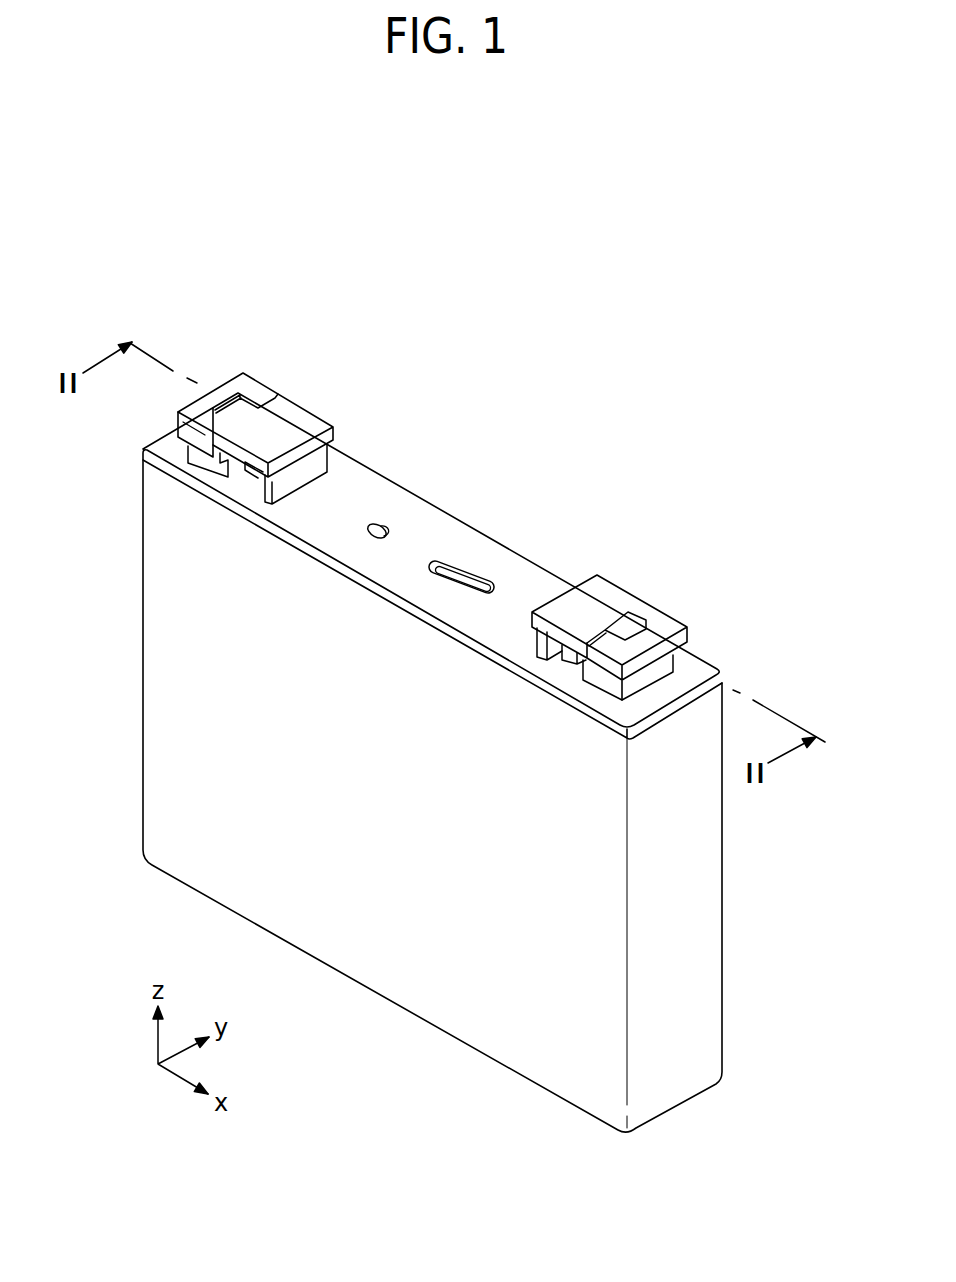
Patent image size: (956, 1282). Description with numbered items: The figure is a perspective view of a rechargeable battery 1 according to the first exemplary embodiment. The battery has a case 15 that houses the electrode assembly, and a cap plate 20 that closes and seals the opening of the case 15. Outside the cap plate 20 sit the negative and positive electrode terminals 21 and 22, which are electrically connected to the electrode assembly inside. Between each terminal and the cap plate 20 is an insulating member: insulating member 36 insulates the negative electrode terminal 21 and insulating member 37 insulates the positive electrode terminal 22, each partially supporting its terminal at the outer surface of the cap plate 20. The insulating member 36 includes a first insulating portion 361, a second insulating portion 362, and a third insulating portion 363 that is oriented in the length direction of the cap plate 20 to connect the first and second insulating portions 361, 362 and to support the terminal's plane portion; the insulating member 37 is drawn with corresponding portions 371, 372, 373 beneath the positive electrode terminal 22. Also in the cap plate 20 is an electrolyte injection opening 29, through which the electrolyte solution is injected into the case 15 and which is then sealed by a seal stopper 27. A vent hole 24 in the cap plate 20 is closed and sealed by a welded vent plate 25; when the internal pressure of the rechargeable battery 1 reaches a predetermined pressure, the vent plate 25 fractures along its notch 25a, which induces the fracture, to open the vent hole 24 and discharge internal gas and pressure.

The rechargeable battery 1 is at (463, 717).
The case 15 is at (703, 906).
The cap plate 20 is at (553, 570).
The negative electrode terminal 21 is at (304, 407).
The positive electrode terminal 22 is at (626, 597).
The vent hole 24 is at (510, 529).
The vent plate 25 is at (457, 572).
The notch 25a is at (478, 583).
The seal stopper 27 is at (373, 525).
The electrolyte injection opening 29 is at (387, 537).
The insulating member 36 is at (197, 524).
The first insulating portion 361 is at (197, 435).
The second insulating portion 362 is at (298, 477).
The third insulating portion 363 is at (253, 467).
The insulating member 37 is at (595, 707).
The first support portion of second insulating member 371 is at (610, 668).
The second support portion of second insulating member 372 is at (540, 642).
The third support portion of second insulating member 373 is at (570, 655).